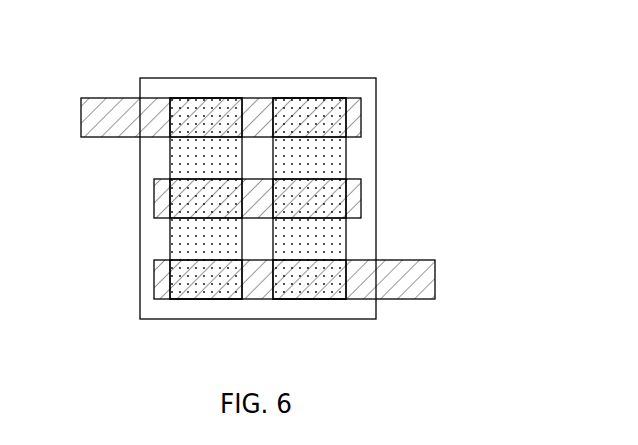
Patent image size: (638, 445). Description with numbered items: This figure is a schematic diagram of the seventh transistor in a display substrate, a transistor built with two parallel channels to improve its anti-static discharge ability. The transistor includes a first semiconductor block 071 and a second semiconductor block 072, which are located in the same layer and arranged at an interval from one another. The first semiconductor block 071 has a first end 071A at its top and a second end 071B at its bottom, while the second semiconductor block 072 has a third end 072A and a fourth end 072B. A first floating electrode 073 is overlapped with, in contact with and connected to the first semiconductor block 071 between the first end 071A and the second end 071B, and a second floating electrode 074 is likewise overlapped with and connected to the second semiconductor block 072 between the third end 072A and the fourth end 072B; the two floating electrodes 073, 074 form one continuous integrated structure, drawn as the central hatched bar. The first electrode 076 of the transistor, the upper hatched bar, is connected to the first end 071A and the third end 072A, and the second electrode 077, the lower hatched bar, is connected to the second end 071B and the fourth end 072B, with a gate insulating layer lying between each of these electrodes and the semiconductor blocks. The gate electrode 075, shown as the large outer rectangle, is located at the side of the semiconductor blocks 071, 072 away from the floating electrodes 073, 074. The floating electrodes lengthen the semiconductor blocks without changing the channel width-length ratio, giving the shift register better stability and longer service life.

The first semiconductor block 071 is at (187, 162).
The second semiconductor block 072 is at (323, 240).
The first end 071A is at (203, 115).
The third end 072A is at (305, 117).
The second end 071B is at (205, 282).
The fourth end 072B is at (308, 282).
The first floating electrode 073 is at (207, 198).
The second floating electrode 074 is at (322, 198).
The gate electrode 075 is at (155, 313).
The first electrode 076 is at (119, 113).
The second electrode 077 is at (403, 283).